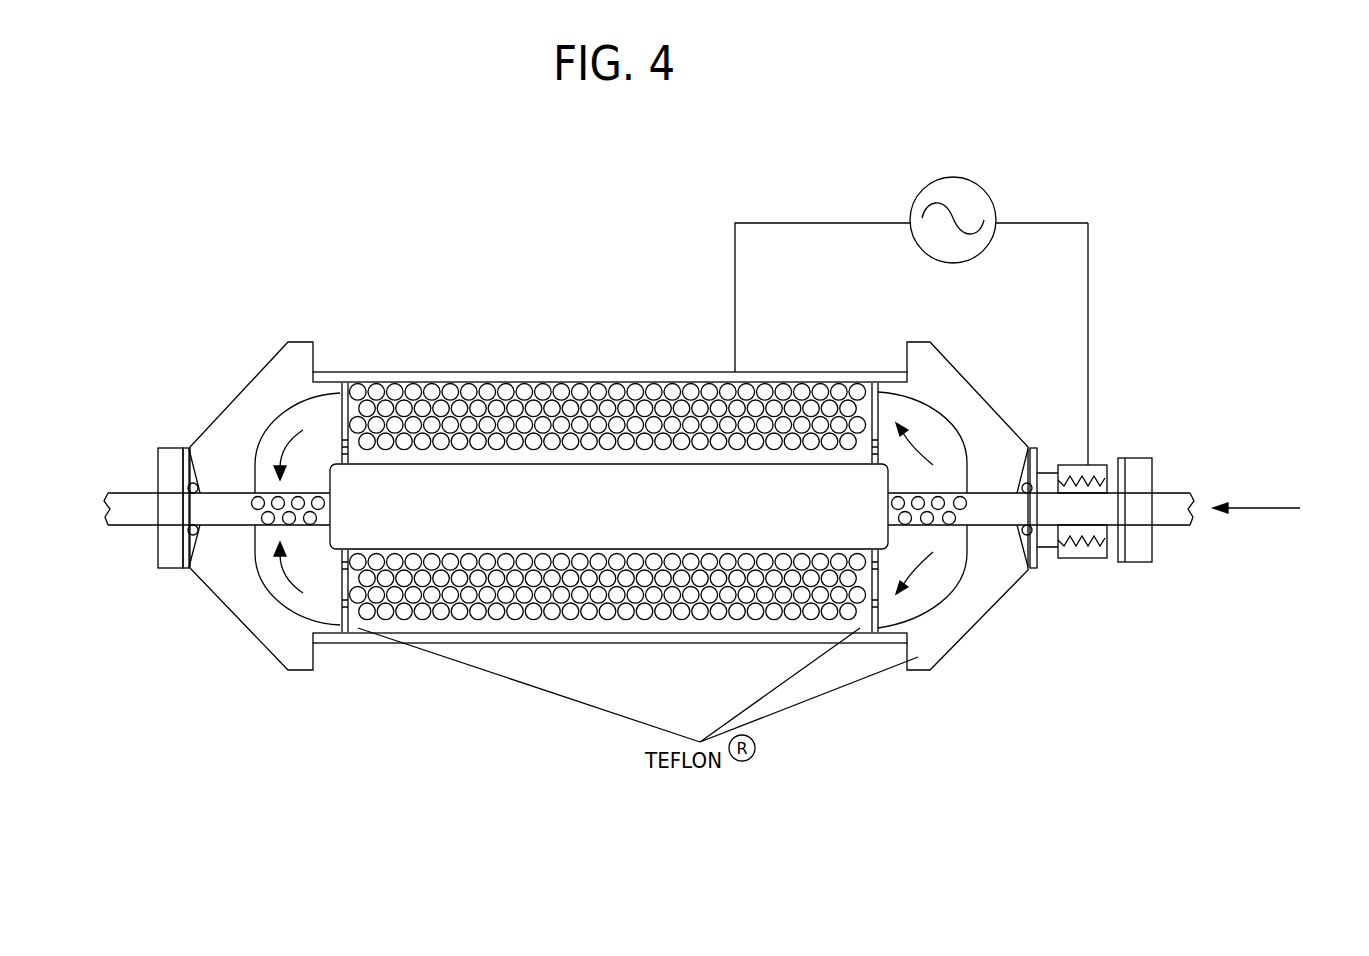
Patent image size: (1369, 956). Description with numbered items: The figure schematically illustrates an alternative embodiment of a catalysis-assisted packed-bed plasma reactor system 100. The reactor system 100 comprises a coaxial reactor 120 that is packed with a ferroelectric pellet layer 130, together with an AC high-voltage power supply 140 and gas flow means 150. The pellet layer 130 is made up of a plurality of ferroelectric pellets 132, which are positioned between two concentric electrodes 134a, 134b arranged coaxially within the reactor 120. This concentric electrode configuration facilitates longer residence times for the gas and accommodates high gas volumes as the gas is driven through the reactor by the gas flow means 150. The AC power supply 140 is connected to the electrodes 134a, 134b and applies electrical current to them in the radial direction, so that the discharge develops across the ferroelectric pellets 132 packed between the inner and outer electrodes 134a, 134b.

The catalysis-assisted packed-bed plasma reactor system 100 is at (1128, 292).
The coaxial reactor 120 is at (485, 373).
The ferroelectric pellet layer 130 is at (437, 395).
The ferroelectric pellets 132 is at (627, 392).
The concentric electrode 134a is at (788, 373).
The concentric electrode 134b is at (992, 493).
The AC high-voltage power supply 140 is at (990, 198).
The gas flow means 150 is at (1257, 508).